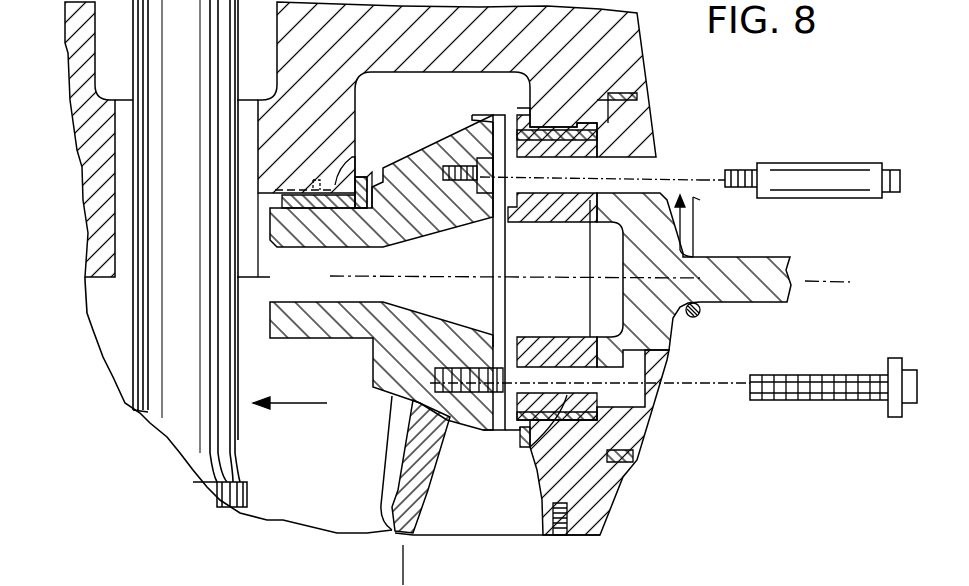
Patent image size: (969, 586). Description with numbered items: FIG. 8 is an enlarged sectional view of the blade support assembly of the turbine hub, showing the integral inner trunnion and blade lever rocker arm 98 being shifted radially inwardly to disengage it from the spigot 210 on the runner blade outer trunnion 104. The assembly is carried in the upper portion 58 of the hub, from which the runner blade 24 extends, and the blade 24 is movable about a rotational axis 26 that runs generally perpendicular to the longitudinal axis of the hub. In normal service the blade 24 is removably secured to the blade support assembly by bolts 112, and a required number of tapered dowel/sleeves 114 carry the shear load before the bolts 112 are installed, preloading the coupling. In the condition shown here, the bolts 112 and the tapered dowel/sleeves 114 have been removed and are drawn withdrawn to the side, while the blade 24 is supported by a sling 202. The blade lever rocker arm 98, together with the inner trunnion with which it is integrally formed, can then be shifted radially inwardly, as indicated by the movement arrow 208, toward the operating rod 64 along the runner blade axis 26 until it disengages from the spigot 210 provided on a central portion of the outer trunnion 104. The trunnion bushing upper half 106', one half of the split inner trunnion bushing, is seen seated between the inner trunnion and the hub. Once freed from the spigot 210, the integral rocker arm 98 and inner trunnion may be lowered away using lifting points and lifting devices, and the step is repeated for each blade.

The upper portion 58 is at (625, 62).
The runner blade 24 is at (732, 302).
The blade lever rocker arm 98 is at (443, 140).
The spigot 210 is at (503, 307).
The trunnion bushing upper half 106' is at (345, 160).
The operating rod 64 is at (240, 453).
The runner blade outer trunnion 104 is at (537, 457).
The sling 202 is at (700, 230).
The tapered dowel/sleeve 114 is at (867, 200).
The bolt 112 is at (810, 400).
The rotational axis 26 is at (833, 283).
The movement arrow 208 is at (293, 403).